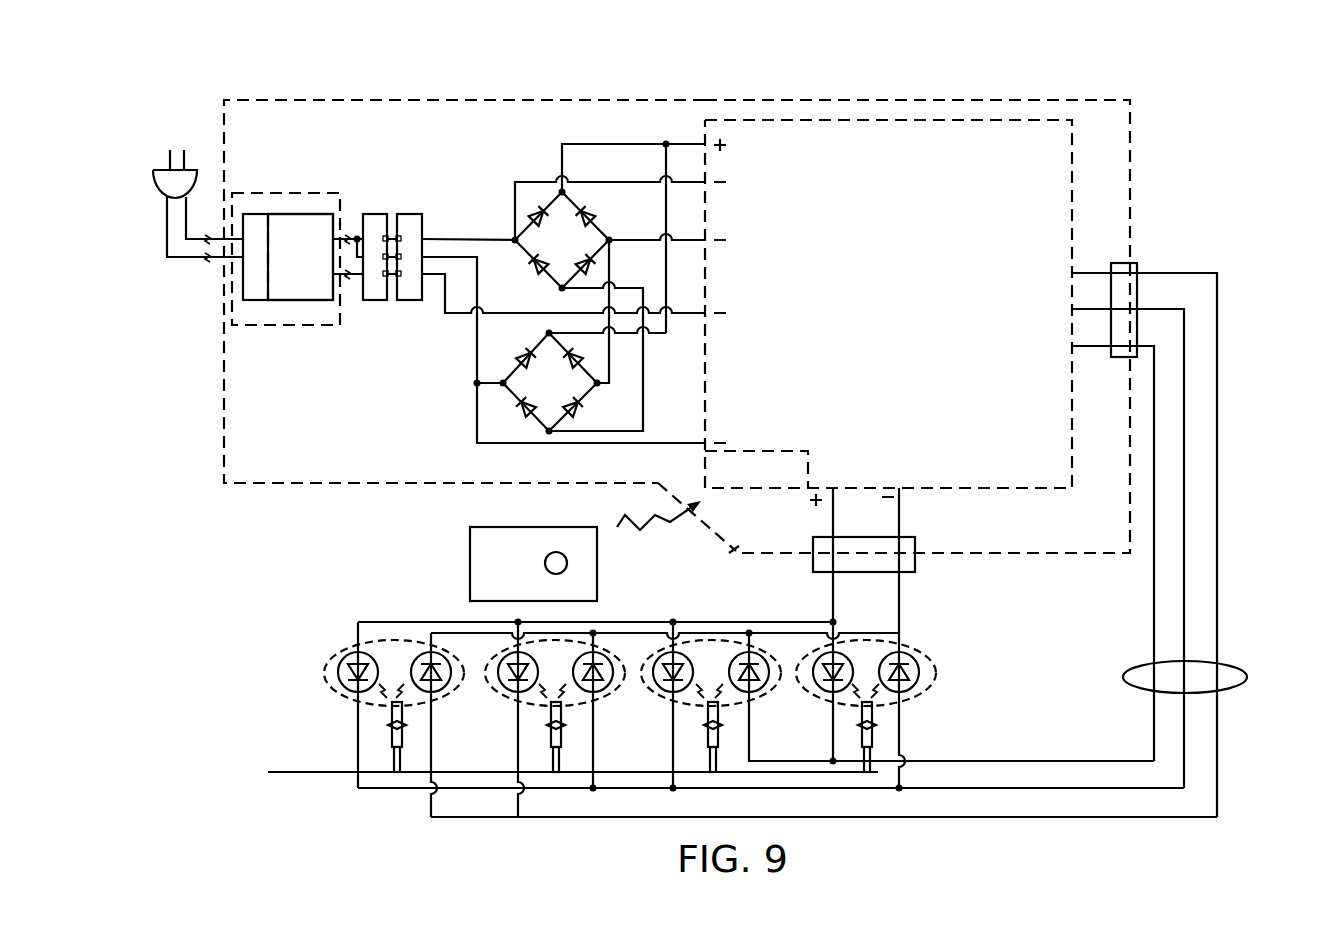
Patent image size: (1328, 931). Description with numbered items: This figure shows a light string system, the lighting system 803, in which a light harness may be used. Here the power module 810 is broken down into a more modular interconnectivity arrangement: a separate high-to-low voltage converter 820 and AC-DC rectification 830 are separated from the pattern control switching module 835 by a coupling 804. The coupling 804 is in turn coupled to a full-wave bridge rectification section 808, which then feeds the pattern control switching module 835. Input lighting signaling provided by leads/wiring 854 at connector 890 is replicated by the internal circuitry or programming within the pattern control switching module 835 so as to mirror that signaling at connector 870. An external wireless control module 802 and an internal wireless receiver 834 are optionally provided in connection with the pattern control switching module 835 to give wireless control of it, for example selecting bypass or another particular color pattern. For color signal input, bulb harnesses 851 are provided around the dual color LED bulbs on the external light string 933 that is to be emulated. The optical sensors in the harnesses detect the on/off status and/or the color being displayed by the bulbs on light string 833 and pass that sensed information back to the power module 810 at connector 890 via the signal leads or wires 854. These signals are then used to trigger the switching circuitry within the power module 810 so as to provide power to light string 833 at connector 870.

The lighting system 803 is at (124, 106).
The full-wave bridge rectification section 808 is at (663, 92).
The pattern control switching module 835 is at (975, 118).
The power module 810 is at (1130, 128).
The high-to-low voltage converter 820 is at (256, 228).
The AC-DC rectification 830 is at (303, 226).
The coupling 804 is at (373, 218).
The connector 890 is at (1137, 270).
The external wireless control module 802 is at (470, 566).
The internal wireless receiver 834 is at (678, 532).
The connector 870 is at (813, 565).
The light string 833 is at (255, 772).
The external light string 933 is at (288, 770).
The bulb harnesses 851 is at (552, 733).
The leads/wiring 854 is at (1230, 692).